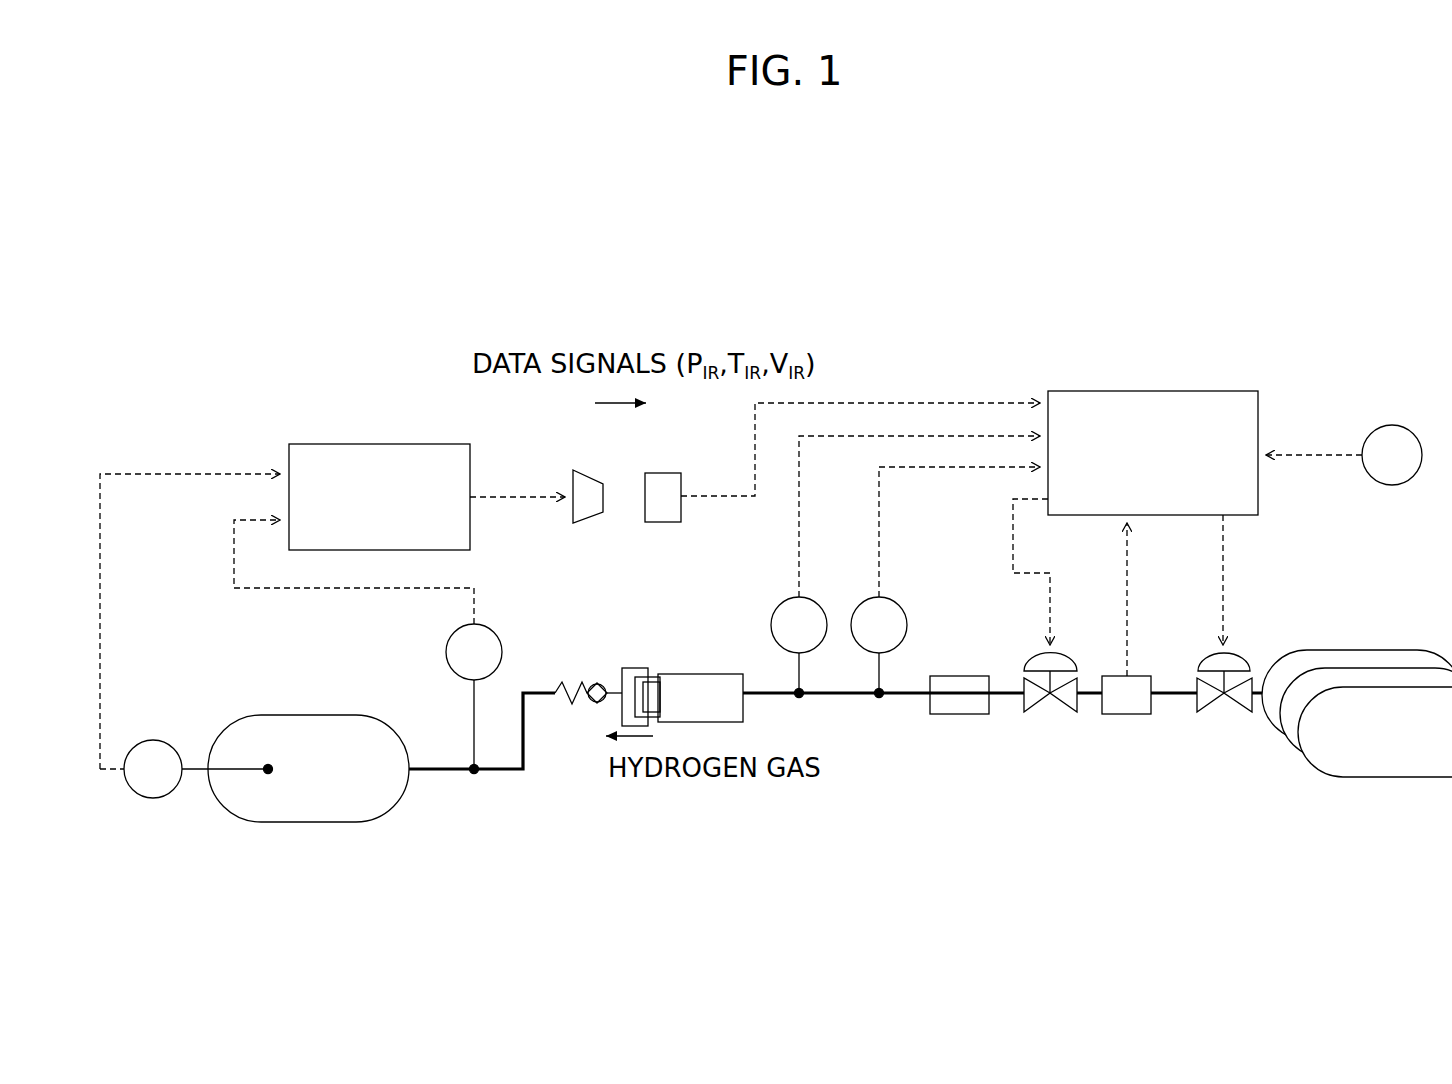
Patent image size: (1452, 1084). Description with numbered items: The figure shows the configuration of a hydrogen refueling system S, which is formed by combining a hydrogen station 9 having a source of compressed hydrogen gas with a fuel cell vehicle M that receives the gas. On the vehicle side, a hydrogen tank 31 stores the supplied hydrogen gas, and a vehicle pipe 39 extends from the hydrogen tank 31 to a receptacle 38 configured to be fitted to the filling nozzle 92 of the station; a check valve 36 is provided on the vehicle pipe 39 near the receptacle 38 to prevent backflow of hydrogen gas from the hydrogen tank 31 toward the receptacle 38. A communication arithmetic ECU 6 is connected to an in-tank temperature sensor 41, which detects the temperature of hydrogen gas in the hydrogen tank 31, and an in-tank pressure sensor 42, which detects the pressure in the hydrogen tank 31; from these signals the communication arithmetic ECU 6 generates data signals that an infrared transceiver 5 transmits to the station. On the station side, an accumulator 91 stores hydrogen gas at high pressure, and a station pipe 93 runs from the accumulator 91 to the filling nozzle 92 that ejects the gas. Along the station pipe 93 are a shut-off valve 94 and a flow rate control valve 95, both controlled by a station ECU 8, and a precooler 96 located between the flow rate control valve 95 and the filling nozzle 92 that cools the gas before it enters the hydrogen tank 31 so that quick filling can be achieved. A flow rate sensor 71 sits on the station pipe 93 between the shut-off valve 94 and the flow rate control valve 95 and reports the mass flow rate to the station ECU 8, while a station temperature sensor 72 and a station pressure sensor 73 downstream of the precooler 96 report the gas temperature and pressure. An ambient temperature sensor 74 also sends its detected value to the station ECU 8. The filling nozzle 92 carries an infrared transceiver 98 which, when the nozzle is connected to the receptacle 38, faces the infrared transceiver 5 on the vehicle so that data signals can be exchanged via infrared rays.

The hydrogen refueling system S is at (323, 254).
The fuel cell vehicle M is at (442, 350).
The hydrogen station 9 is at (890, 324).
The communication arithmetic ECU 6 is at (432, 444).
The infrared transceiver 5 is at (590, 470).
The infrared transceiver 98 is at (666, 473).
The station ECU 8 is at (1225, 391).
The ambient temperature sensor 74 is at (1408, 430).
The in-tank temperature sensor 41 is at (164, 741).
The hydrogen tank 31 is at (356, 716).
The vehicle pipe 39 is at (517, 772).
The in-tank pressure sensor 42 is at (490, 628).
The check valve 36 is at (578, 681).
The receptacle 38 is at (638, 668).
The filling nozzle 92 is at (705, 674).
The station pipe 93 is at (762, 698).
The station temperature sensor 72 is at (813, 599).
The station pressure sensor 73 is at (893, 599).
The precooler 96 is at (962, 676).
The flow rate control valve 95 is at (1066, 661).
The flow rate sensor 71 is at (1140, 676).
The shut-off valve 94 is at (1240, 661).
The accumulator 91 is at (1372, 652).